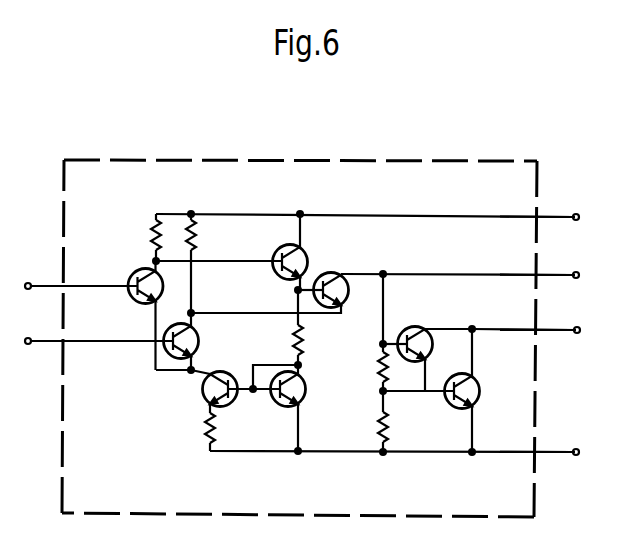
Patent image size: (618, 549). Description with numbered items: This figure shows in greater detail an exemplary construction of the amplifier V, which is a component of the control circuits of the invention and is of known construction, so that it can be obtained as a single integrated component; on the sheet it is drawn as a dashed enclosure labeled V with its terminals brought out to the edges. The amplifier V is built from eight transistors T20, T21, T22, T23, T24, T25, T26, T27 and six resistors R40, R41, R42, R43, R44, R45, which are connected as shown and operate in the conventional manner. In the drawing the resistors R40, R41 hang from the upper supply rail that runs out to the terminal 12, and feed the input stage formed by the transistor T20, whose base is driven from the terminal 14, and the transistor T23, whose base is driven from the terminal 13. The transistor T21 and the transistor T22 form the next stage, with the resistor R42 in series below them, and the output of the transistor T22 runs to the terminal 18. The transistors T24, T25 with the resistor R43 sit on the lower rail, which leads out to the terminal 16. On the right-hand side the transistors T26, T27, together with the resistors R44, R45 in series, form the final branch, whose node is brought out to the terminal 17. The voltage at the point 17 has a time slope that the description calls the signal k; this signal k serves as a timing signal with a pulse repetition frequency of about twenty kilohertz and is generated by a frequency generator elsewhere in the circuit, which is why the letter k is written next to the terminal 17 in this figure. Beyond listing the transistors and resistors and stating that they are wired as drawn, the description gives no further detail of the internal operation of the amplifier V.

The supply terminal 12 is at (548, 219).
The input terminal 13 is at (96, 329).
The input terminal 14 is at (79, 274).
The ground/reference terminal 16 is at (547, 455).
The point 17 is at (549, 331).
The output terminal 18 is at (548, 277).
The amplifier V is at (352, 160).
The signal k is at (544, 330).
The transistor T20 is at (158, 315).
The transistor T21 is at (304, 252).
The transistor T22 is at (284, 293).
The transistor T23 is at (195, 341).
The transistor T24 is at (224, 400).
The transistor T25 is at (303, 408).
The transistor T26 is at (435, 359).
The transistor T27 is at (476, 390).
The resistor R40 is at (141, 235).
The resistor R41 is at (205, 235).
The resistor R42 is at (314, 341).
The resistor R43 is at (191, 428).
The resistor R44 is at (369, 367).
The resistor R45 is at (370, 429).